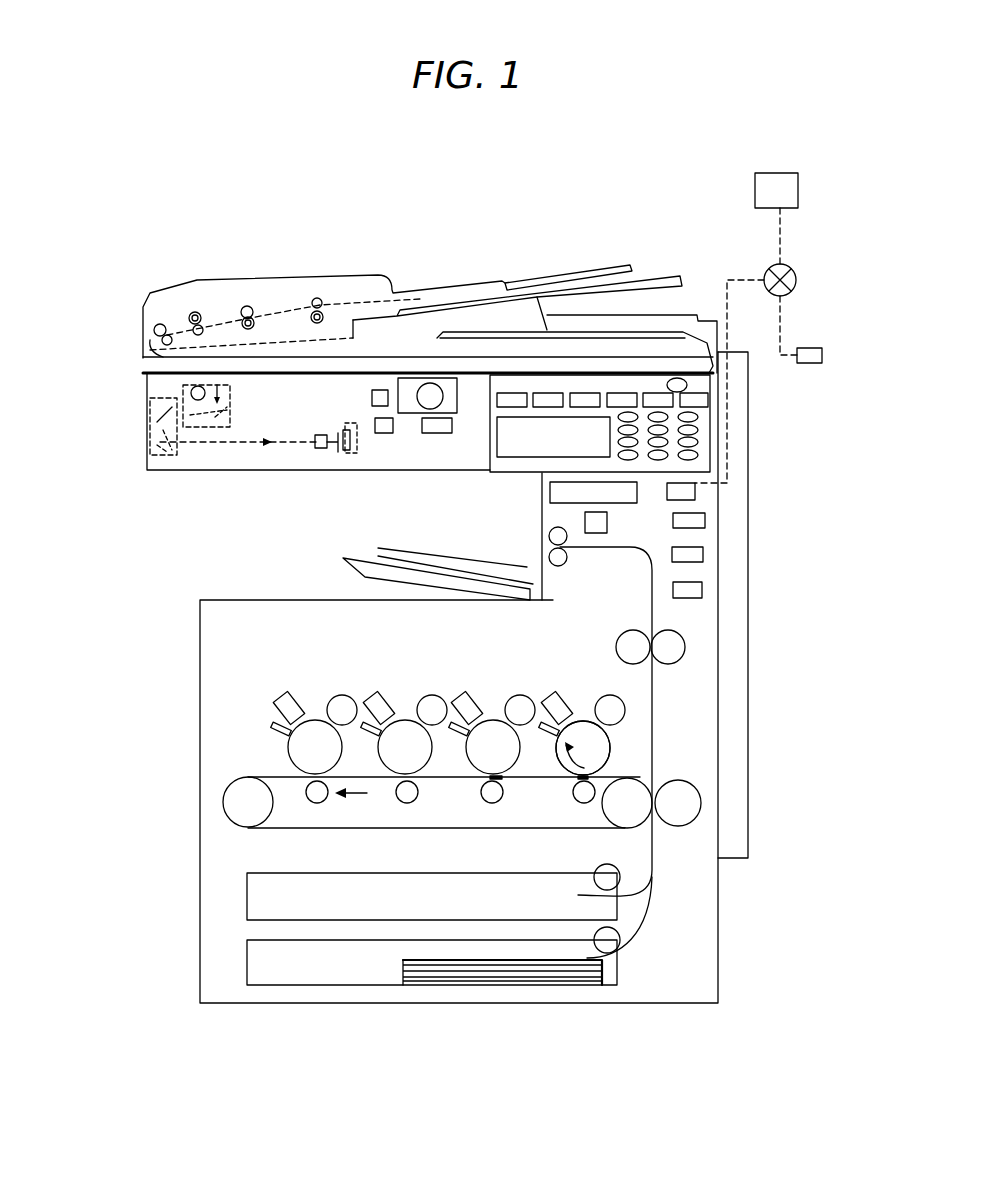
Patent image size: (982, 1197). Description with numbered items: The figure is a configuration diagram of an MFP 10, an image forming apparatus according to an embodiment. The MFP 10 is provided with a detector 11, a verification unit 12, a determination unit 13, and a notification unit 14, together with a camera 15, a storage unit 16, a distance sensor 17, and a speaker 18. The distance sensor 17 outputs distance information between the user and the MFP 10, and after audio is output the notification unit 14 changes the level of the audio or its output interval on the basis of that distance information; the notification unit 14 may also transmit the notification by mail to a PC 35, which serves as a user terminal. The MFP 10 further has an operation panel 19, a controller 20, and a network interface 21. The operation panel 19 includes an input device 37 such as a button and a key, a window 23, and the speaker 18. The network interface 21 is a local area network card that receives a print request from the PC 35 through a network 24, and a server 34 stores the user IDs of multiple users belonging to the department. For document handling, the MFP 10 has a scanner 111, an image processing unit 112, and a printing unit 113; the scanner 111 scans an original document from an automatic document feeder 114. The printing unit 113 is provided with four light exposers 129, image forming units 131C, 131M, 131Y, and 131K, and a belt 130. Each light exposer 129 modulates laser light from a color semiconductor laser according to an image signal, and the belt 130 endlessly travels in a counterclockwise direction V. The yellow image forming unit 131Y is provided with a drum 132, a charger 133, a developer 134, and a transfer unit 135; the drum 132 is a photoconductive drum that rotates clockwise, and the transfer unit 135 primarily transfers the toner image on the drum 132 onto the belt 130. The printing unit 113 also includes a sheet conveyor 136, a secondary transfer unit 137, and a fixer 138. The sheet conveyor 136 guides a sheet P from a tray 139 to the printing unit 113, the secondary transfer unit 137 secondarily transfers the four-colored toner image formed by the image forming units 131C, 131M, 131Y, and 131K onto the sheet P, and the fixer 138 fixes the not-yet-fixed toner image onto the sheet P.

The MFP 10 is at (236, 240).
The automatic document feeder 114 is at (293, 277).
The input device 37 is at (620, 380).
The speaker 18 is at (678, 373).
The scanner 111 is at (150, 470).
The distance sensor 17 is at (383, 390).
The camera 15 is at (418, 378).
The detector 11 is at (385, 433).
The notification unit 14 is at (437, 433).
The operation panel 19 is at (707, 447).
The window 23 is at (500, 432).
The PC 35 is at (753, 197).
The network 24 is at (762, 273).
The server 34 is at (813, 353).
The controller 20 is at (552, 490).
The image processing unit 112 is at (585, 520).
The network interface 21 is at (683, 492).
The verification unit 12 is at (702, 522).
The determination unit 13 is at (695, 557).
The storage unit 16 is at (698, 587).
The printing unit 113 is at (176, 662).
The sheet conveyor 136 is at (686, 878).
The fixer 138 is at (687, 642).
The secondary transfer unit 137 is at (700, 797).
The belt 130 is at (287, 777).
The counterclockwise direction V is at (360, 794).
The image forming unit 131K is at (262, 688).
The image forming unit 131C is at (352, 690).
The image forming unit 131M is at (440, 686).
The yellow image forming unit 131Y is at (514, 682).
The developer 134 is at (603, 695).
The light exposer 129 is at (557, 703).
The charger 133 is at (543, 730).
The drum 132 is at (558, 760).
The transfer unit 135 is at (577, 797).
The sheet P is at (423, 958).
The tray 139 is at (247, 960).